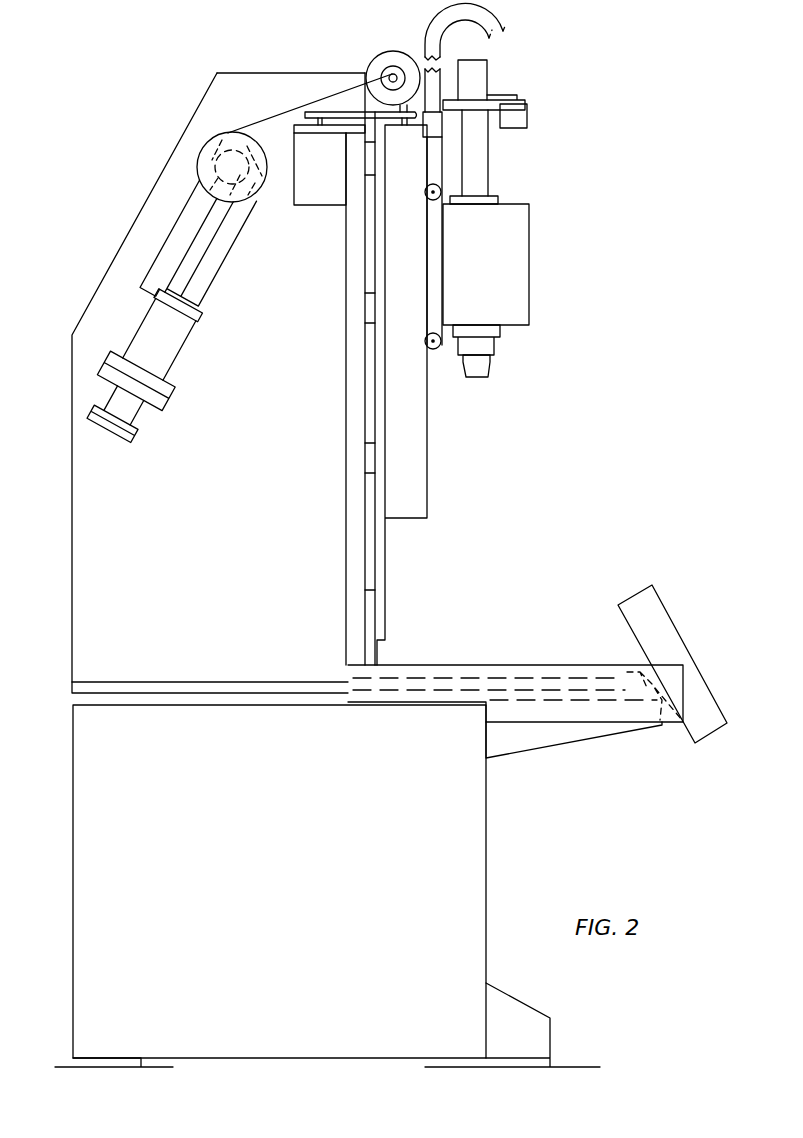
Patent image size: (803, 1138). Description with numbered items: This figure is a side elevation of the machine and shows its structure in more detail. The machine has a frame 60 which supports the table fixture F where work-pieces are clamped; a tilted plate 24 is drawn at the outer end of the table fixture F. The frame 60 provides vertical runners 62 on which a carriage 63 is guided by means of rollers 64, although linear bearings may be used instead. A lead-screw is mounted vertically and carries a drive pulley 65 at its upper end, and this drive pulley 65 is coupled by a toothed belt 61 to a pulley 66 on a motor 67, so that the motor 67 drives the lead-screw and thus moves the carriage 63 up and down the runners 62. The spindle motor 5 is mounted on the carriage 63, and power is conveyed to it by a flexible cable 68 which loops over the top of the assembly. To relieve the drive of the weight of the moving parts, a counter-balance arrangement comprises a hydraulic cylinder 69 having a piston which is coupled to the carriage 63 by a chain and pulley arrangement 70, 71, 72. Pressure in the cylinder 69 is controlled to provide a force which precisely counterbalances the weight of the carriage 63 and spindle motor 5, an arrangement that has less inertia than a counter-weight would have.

The spindle motor 5 is at (515, 233).
The deflector plate 24 is at (658, 612).
The frame 60 is at (72, 590).
The toothed belt 61 is at (358, 112).
The vertical runners 62 is at (387, 473).
The carriage 63 is at (437, 277).
The rollers 64 is at (443, 188).
The drive pulley 65 is at (398, 72).
The pulley 66 is at (320, 112).
The motor 67 is at (310, 205).
The flexible cable 68 is at (507, 12).
The hydraulic cylinder 69 is at (172, 358).
The chain and pulley arrangement 70 is at (202, 150).
The chain and pulley arrangement 71 is at (266, 113).
The chain and pulley arrangement 72 is at (380, 67).
The table fixture F is at (547, 663).